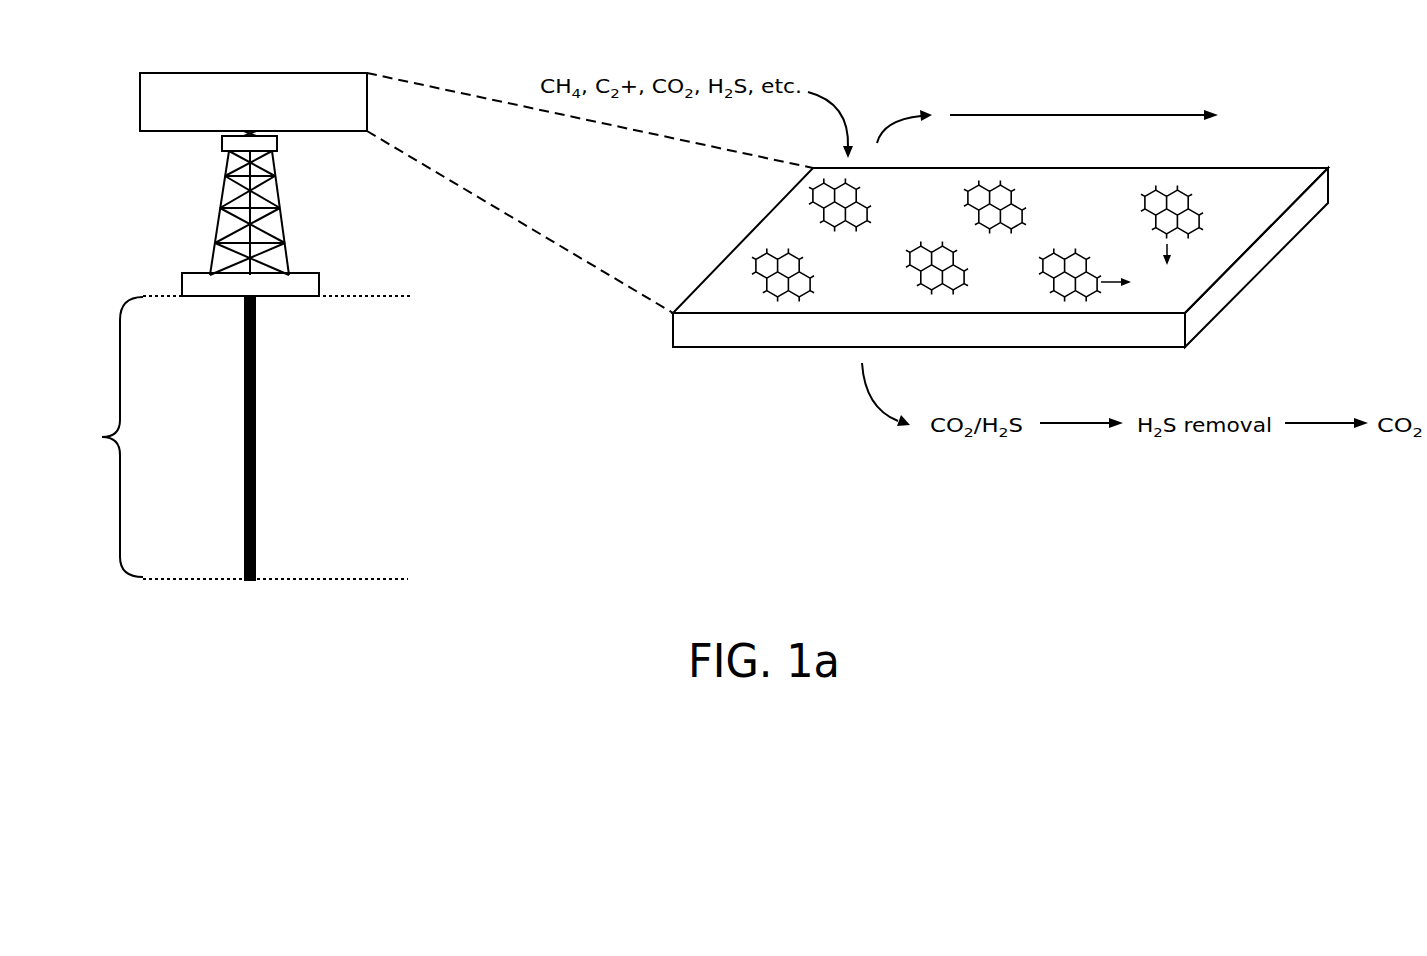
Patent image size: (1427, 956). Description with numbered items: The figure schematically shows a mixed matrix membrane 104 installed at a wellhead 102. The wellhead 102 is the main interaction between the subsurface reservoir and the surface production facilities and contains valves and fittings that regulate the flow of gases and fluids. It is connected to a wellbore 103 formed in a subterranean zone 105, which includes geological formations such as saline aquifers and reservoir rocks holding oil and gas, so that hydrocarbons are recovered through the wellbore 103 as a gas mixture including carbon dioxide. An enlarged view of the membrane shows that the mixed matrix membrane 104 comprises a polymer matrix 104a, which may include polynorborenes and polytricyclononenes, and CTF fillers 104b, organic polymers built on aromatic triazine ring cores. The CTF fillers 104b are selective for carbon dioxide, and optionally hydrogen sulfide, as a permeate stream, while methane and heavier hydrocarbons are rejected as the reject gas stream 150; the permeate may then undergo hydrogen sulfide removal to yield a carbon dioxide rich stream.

The wellhead 102 is at (223, 194).
The wellbore 103 is at (256, 440).
The mixed matrix membrane 104 is at (276, 114).
The polymer matrix 104a is at (970, 240).
The CTF fillers 104b is at (1062, 247).
The subterranean zone 105 is at (96, 437).
The reject gas stream 150 is at (1055, 114).